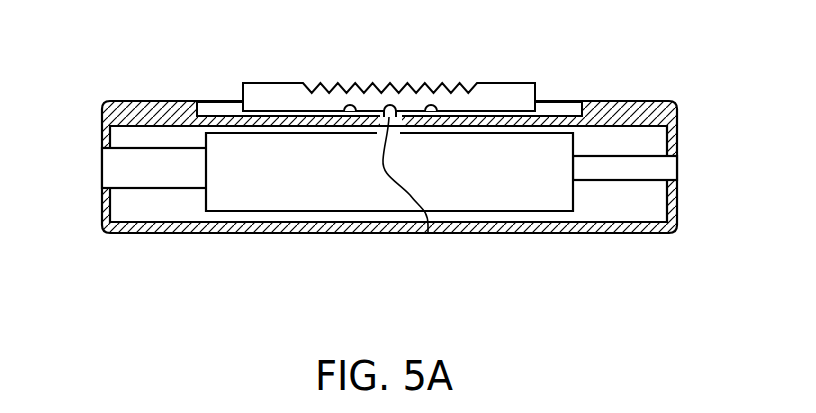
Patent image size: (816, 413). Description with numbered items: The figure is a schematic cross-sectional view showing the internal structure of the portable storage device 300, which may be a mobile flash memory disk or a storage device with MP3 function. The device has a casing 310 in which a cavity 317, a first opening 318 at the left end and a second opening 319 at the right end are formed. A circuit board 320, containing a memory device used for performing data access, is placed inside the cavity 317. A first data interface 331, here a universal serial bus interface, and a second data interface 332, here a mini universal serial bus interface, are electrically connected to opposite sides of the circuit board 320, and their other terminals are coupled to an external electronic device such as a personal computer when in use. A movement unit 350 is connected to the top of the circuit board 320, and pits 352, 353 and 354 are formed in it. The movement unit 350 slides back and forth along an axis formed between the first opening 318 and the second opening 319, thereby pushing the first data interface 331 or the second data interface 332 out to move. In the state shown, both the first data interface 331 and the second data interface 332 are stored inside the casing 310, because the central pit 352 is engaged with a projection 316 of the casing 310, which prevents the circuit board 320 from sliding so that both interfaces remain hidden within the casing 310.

The portable storage device 300 is at (388, 147).
The casing 310 is at (630, 112).
The projection 316 is at (428, 233).
The cavity 317 is at (604, 205).
The first opening 318 is at (103, 147).
The second opening 319 is at (677, 157).
The circuit board 320 is at (310, 180).
The first data interface 331 is at (118, 168).
The second data interface 332 is at (658, 168).
The movement unit 350 is at (405, 92).
The pit 352 is at (389, 103).
The pit 353 is at (350, 101).
The pit 354 is at (431, 101).